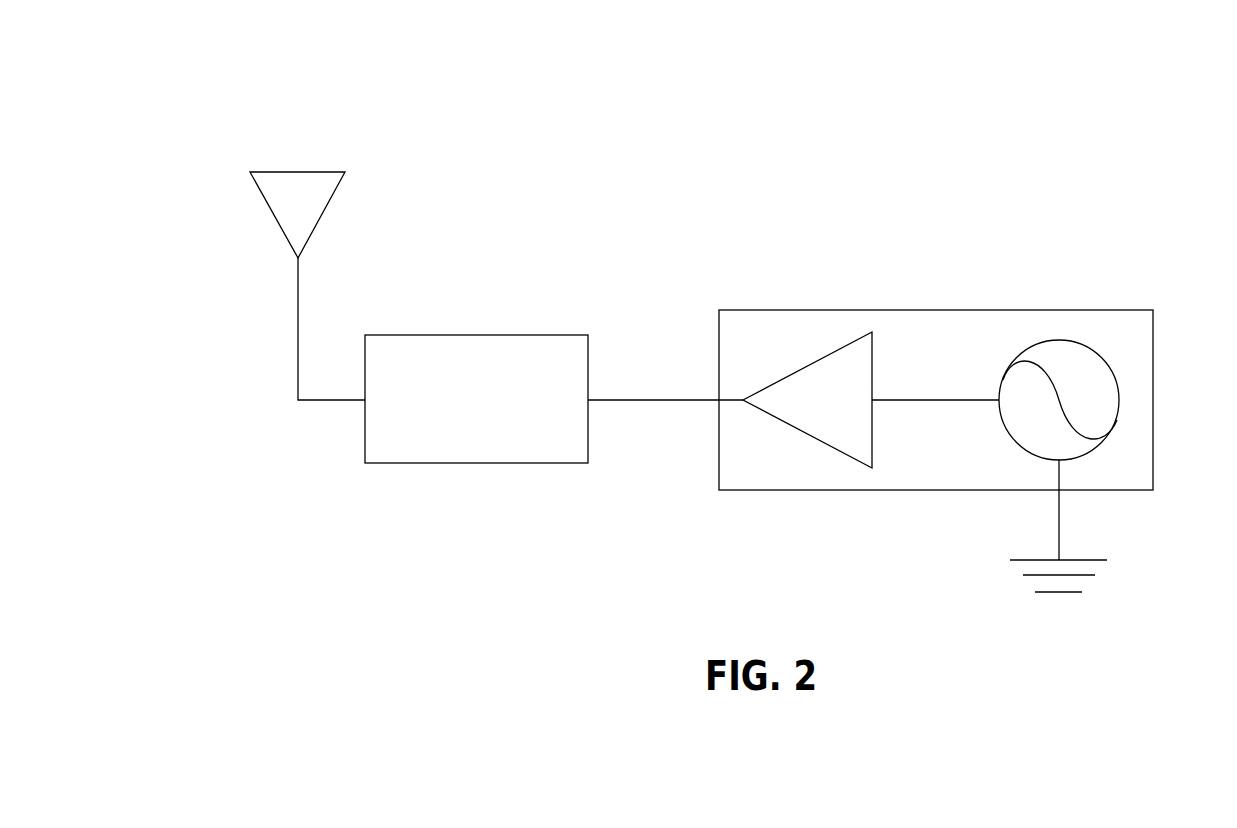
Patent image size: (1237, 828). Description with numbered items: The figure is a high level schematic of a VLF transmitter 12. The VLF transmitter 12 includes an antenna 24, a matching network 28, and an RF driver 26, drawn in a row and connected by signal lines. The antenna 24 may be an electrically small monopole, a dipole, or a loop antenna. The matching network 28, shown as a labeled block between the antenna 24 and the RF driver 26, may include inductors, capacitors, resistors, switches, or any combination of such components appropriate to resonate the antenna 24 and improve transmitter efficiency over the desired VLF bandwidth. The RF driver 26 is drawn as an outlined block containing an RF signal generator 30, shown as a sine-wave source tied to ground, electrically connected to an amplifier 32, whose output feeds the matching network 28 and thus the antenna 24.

The VLF transmitter 12 is at (666, 160).
The antenna 24 is at (310, 190).
The RF driver 26 is at (1012, 320).
The matching network 28 is at (505, 348).
The RF signal generator 30 is at (1087, 382).
The amplifier 32 is at (828, 410).